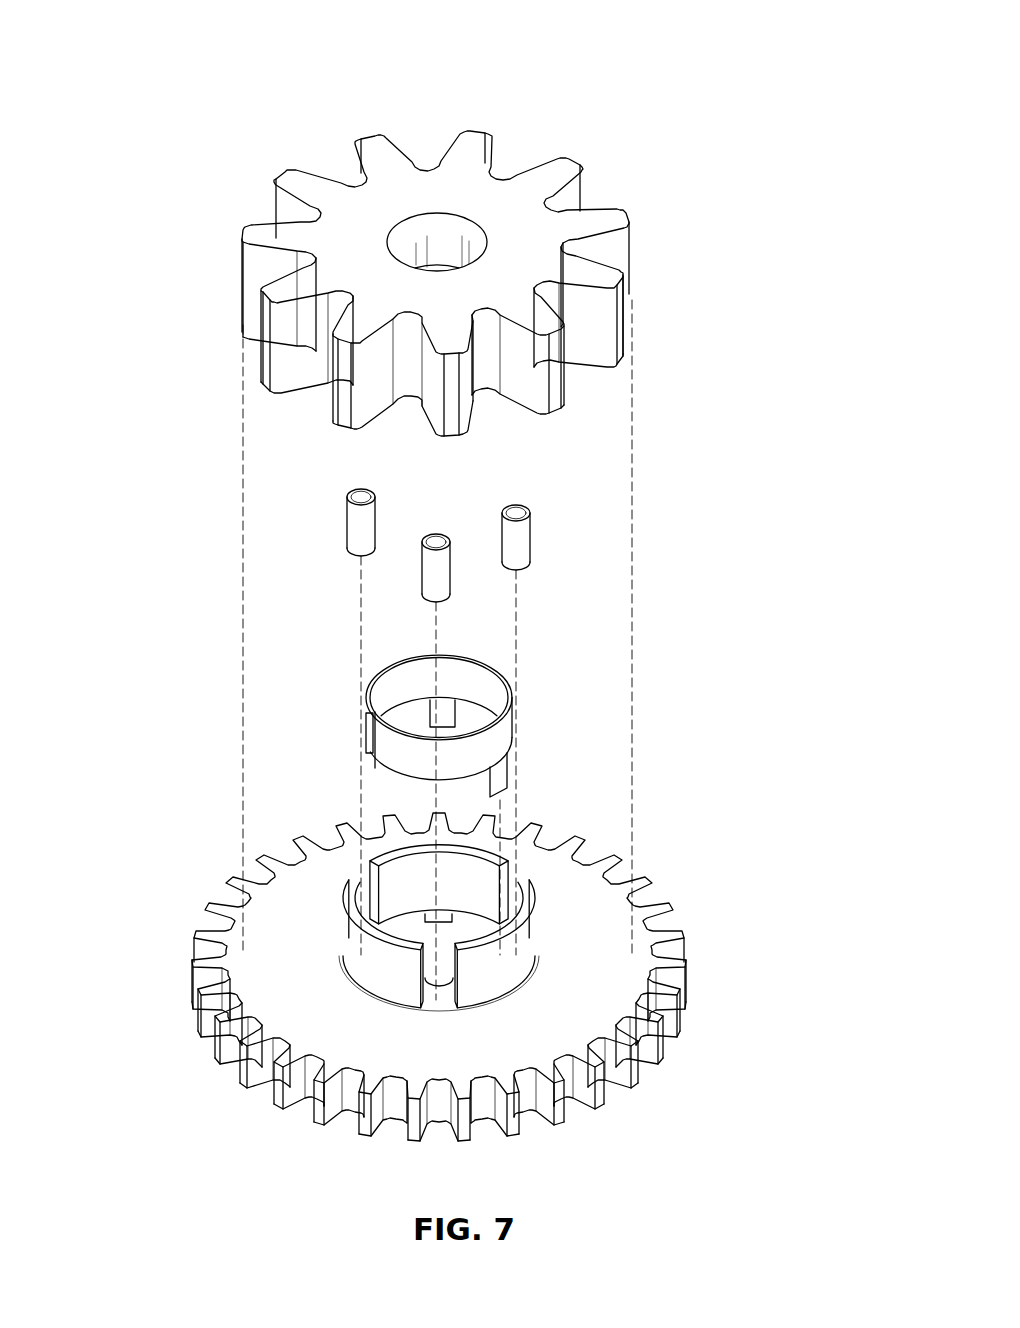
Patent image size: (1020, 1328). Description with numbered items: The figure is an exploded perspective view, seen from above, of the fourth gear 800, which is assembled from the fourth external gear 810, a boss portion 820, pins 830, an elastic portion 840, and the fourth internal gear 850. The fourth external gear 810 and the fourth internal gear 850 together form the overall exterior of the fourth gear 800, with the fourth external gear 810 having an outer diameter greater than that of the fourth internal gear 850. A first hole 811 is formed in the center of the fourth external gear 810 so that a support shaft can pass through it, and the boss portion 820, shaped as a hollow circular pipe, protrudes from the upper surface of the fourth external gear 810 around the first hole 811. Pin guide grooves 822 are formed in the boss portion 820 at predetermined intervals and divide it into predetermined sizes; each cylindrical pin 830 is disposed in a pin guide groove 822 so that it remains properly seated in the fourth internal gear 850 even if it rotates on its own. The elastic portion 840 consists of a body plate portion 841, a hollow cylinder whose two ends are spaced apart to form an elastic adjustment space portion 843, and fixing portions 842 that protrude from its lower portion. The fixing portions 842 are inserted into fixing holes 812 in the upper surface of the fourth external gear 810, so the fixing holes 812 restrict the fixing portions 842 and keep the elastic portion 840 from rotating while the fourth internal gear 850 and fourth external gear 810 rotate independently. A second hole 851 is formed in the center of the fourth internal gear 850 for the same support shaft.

The fourth gear 800 is at (183, 182).
The fourth external gear 810 is at (598, 983).
The first hole 811 is at (447, 940).
The fixing hole 812 is at (450, 912).
The boss portion 820 is at (468, 880).
The pin guide grooves 822 is at (373, 890).
The pins 830 is at (367, 517).
The elastic portion 840 is at (753, 583).
The body plate portion 841 is at (473, 680).
The fixing portions 842 is at (447, 717).
The elastic adjustment space portion 843 is at (363, 740).
The fourth internal gear 850 is at (540, 232).
The second hole 851 is at (449, 246).